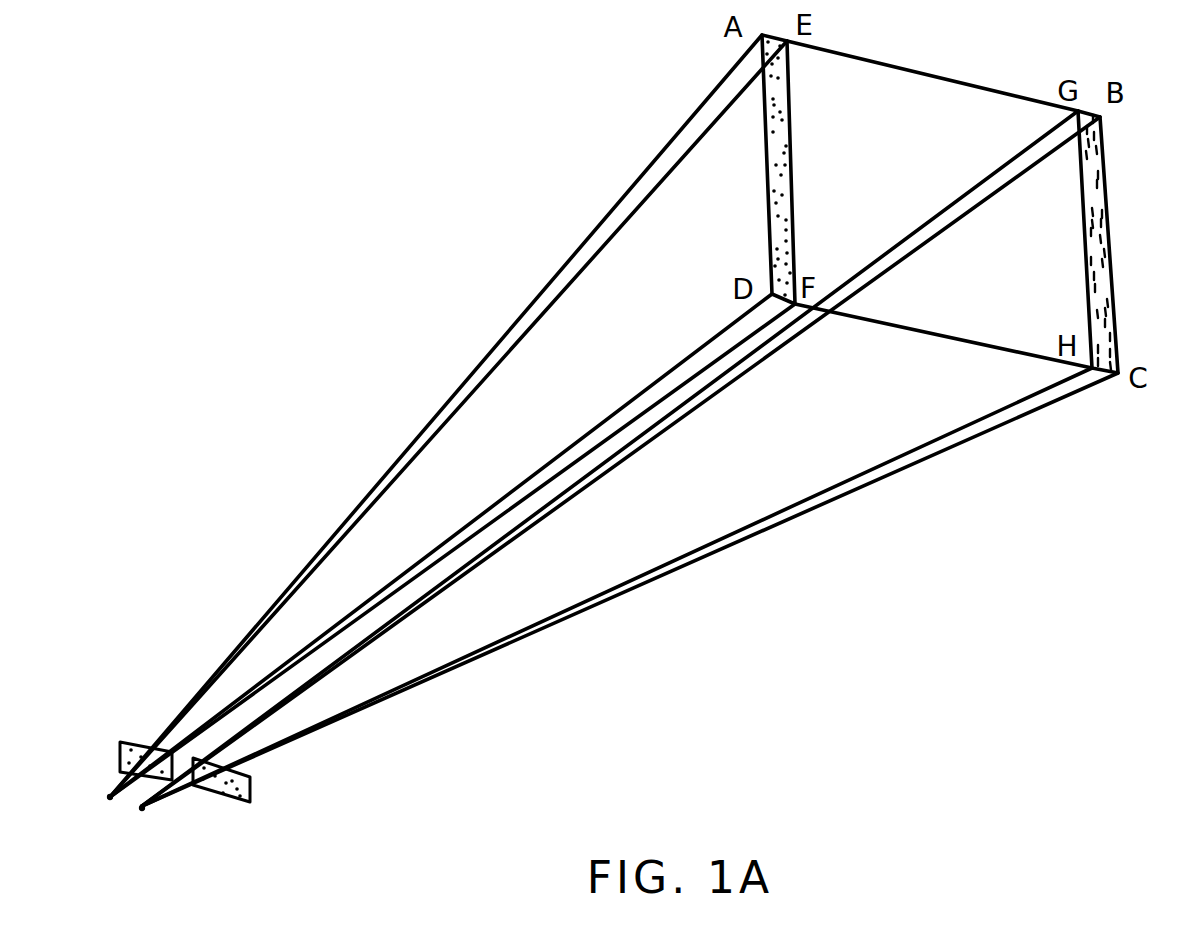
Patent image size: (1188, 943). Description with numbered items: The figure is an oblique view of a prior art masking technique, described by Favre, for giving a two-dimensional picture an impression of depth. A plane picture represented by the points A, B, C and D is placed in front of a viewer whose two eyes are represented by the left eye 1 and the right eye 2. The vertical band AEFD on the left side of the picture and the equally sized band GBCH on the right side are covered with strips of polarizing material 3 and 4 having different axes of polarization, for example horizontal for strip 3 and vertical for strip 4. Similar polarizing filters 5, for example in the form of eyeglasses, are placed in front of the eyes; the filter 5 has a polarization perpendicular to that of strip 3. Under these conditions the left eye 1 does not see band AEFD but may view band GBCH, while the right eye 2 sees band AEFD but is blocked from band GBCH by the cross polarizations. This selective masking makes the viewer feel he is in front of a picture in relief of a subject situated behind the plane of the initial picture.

The left eye 1 is at (430, 430).
The right eye 2 is at (629, 477).
The strip of polarizing material 3 is at (765, 201).
The strip of polarizing material 4 is at (1112, 232).
The polarizing filter 5 is at (120, 757).